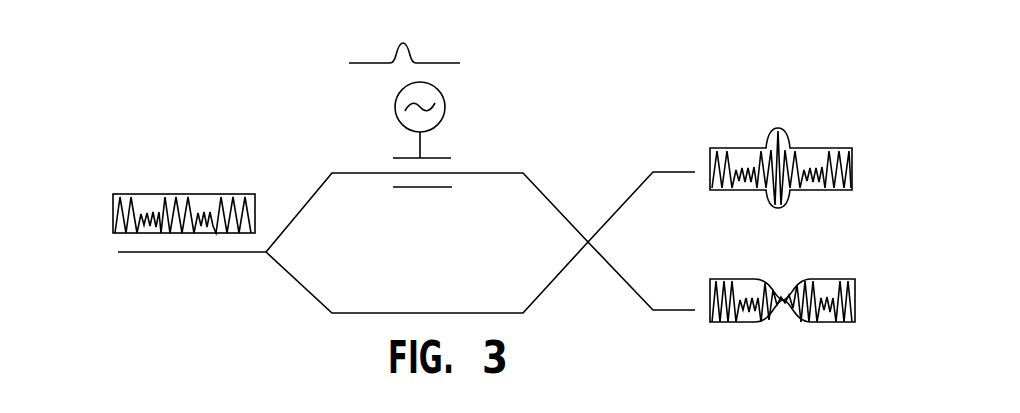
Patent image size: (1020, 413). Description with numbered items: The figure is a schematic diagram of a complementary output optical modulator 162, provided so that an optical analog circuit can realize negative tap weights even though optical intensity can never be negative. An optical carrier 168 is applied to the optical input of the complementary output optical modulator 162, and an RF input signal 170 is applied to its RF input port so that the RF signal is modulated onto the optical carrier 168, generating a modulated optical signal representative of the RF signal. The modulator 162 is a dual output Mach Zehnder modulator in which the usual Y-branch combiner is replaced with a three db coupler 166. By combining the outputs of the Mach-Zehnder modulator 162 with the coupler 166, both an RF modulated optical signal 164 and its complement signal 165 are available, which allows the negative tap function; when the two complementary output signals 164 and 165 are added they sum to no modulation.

The complementary output optical modulator 162 is at (544, 145).
The RF modulated optical signal 164 is at (836, 135).
The complement signal 165 is at (866, 277).
The 3 db coupler 166 is at (604, 202).
The optical carrier 168 is at (271, 188).
The RF input signal 170 is at (461, 91).